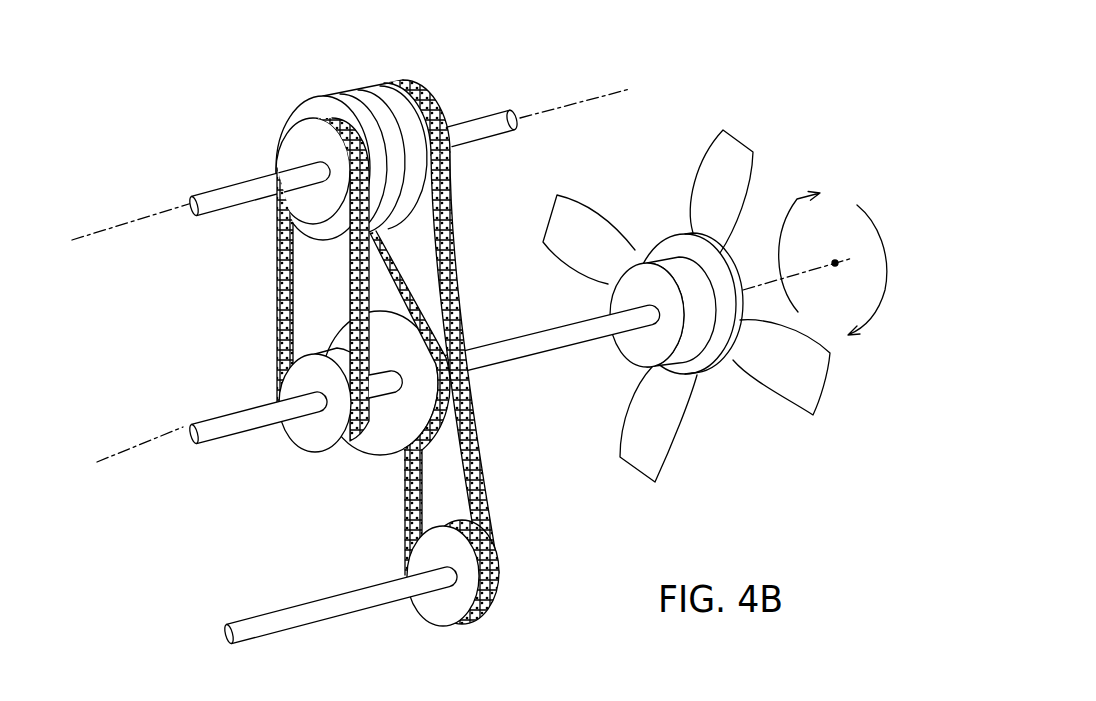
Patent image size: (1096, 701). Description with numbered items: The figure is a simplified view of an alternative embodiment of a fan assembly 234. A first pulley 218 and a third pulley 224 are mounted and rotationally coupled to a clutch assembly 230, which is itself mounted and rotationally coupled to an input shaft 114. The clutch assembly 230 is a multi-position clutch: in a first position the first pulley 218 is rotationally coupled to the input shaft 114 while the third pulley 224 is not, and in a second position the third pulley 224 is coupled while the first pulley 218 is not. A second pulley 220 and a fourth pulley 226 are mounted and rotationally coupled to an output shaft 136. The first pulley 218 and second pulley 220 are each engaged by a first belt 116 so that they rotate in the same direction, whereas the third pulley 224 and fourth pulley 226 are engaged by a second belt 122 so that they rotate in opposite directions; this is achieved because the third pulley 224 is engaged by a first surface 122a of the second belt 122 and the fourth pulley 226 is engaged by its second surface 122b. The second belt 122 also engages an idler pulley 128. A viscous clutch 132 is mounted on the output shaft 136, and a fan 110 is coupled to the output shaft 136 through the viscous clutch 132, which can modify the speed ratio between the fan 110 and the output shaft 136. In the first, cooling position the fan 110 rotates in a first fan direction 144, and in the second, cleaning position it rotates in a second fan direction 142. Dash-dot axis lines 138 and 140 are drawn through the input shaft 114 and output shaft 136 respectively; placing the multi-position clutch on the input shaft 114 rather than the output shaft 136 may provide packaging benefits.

The fan 110 is at (800, 387).
The input shaft 114 is at (227, 186).
The first belt 116 is at (277, 291).
The second belt 122 is at (485, 364).
The first surface of second belt 122a is at (415, 487).
The second surface of second belt 122b is at (470, 423).
The idler pulley 128 is at (467, 592).
The viscous clutch 132 is at (690, 337).
The output shaft 136 is at (220, 416).
The first axis 138 is at (96, 232).
The second axis 140 is at (123, 454).
The second fan direction 142 is at (873, 323).
The first fan direction 144 is at (793, 197).
The first pulley 218 is at (313, 150).
The second pulley 220 is at (313, 430).
The third pulley 224 is at (408, 100).
The fourth pulley 226 is at (408, 432).
The clutch assembly 230 is at (350, 129).
The fan assembly 234 is at (701, 49).